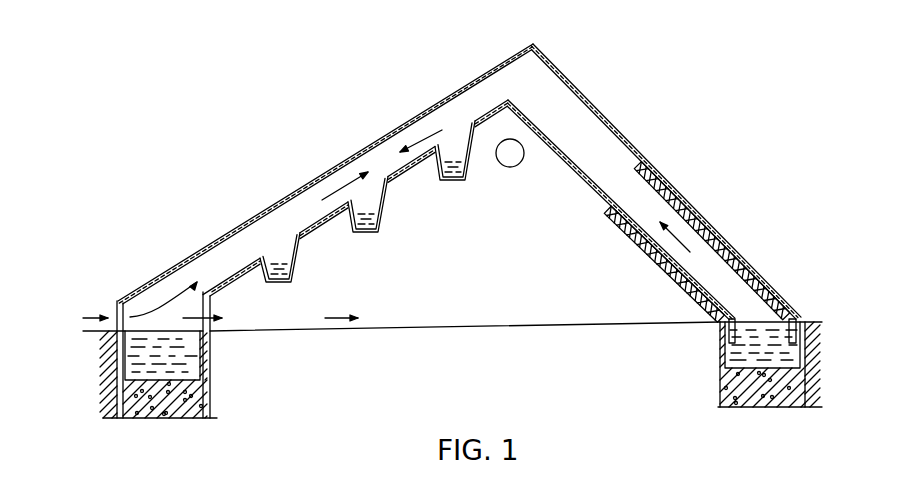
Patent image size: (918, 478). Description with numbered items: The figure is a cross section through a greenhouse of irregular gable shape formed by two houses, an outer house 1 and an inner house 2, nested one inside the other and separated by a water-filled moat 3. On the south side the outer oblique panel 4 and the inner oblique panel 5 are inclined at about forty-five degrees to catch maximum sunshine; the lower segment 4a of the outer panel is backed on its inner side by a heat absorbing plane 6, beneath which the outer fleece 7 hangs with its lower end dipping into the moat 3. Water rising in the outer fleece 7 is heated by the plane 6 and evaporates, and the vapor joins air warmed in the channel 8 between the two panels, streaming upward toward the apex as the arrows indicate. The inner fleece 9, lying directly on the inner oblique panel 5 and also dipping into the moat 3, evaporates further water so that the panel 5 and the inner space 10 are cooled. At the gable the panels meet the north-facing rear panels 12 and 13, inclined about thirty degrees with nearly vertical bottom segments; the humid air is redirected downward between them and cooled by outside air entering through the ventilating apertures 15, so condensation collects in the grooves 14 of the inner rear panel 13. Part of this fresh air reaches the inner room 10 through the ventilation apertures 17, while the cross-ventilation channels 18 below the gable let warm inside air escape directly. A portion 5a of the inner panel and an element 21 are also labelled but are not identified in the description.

The outer house 1 is at (459, 193).
The inner house 2 is at (593, 197).
The moat 3 is at (730, 348).
The outer oblique panel 4 is at (715, 231).
The lower segment of outer oblique panel 4a is at (587, 98).
The inner oblique panel 5 is at (469, 188).
The inner roof panel (right) 5a is at (621, 221).
The heat absorbing plane 6 is at (710, 230).
The outer fleece 7 is at (748, 272).
The channel 8 is at (712, 236).
The inner fleece 9 is at (640, 238).
The inner space 10 is at (410, 190).
The outer rear panel 12 is at (325, 174).
The inner rear panel 13 is at (312, 222).
The grooves 14 is at (293, 270).
The ventilating apertures 15 is at (119, 312).
The ventilation apertures 17 is at (210, 325).
The cross-ventilation channels 18 is at (512, 160).
The insulation layer 21 is at (242, 243).